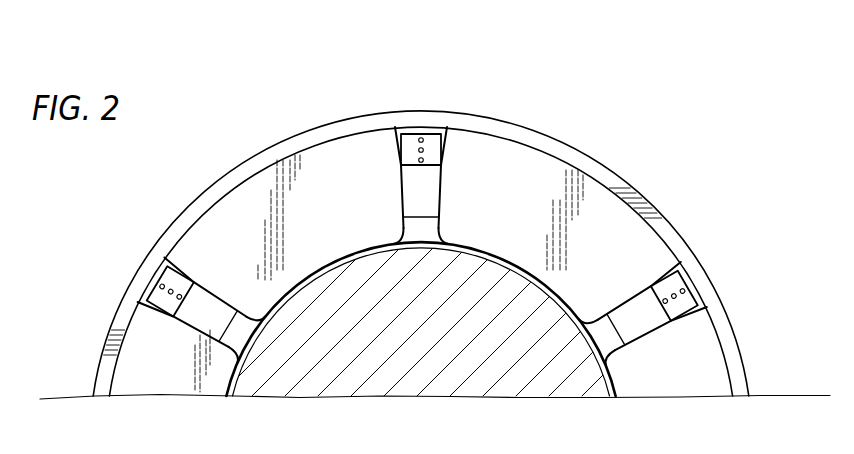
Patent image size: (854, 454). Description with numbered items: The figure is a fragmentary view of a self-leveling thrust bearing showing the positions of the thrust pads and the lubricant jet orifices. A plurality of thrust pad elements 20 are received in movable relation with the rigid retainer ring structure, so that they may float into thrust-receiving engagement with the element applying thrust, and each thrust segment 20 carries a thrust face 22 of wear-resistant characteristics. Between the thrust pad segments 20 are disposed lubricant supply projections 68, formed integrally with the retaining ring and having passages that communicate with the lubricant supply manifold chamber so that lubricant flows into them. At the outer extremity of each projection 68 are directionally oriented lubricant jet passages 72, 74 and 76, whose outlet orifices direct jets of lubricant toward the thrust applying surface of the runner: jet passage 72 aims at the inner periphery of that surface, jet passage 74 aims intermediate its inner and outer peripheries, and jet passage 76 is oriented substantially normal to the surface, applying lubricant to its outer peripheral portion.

The thrust pad elements 20 is at (386, 249).
The thrust face 22 is at (312, 250).
The lubricant supply projections 68 is at (433, 138).
The lubricant jet passage 72 is at (168, 312).
The lubricant jet passage 74 is at (171, 290).
The lubricant jet passage 76 is at (140, 298).